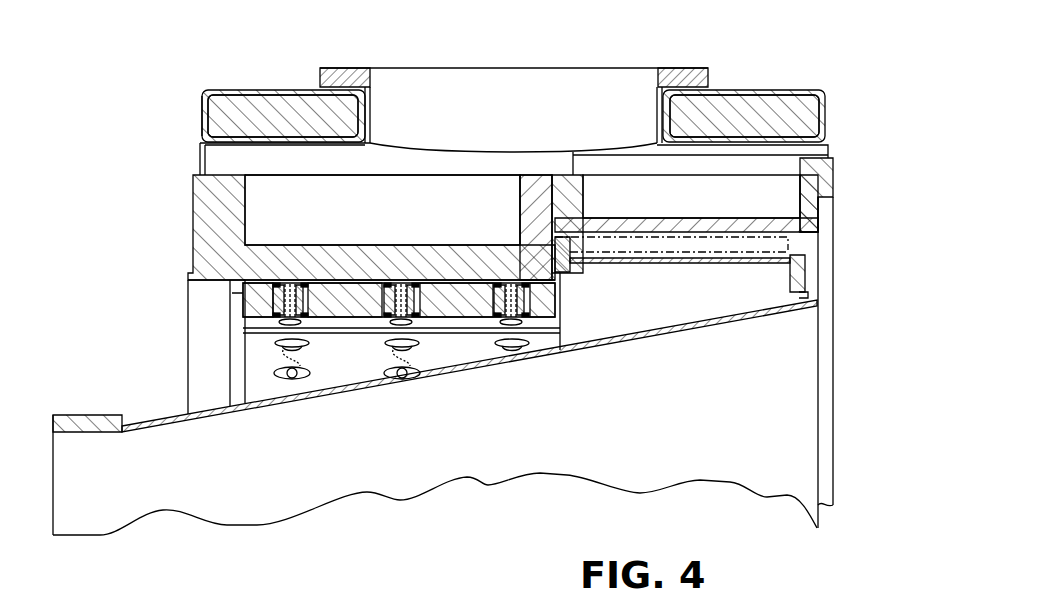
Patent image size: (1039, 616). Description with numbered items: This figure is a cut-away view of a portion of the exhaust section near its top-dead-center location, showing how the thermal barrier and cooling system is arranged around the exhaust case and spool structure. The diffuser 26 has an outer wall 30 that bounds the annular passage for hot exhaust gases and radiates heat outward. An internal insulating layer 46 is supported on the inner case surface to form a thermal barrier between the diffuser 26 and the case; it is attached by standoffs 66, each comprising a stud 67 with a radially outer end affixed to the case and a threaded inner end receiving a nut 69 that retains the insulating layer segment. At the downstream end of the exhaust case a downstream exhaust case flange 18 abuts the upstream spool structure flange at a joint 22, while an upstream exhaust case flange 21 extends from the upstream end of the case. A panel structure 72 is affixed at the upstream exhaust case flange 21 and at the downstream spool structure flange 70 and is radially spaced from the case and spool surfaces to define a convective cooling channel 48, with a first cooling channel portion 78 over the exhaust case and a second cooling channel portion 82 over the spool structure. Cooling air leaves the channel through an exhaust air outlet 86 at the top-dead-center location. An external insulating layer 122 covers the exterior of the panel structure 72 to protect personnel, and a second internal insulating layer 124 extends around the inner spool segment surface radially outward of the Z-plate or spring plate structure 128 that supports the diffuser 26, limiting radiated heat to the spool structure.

The downstream exhaust case flange 18 is at (533, 185).
The upstream exhaust case flange 21 is at (222, 217).
The joint 22 is at (571, 185).
The diffuser 26 is at (157, 415).
The outer wall 30 is at (178, 413).
The internal insulating layer 46 is at (243, 280).
The convective cooling channel 48 is at (430, 161).
The standoff 66 is at (279, 302).
The stud 67 is at (275, 320).
The nut 69 is at (318, 335).
The downstream spool structure flange 70 is at (832, 165).
The panel structure 72 is at (277, 137).
The first cooling channel portion 78 is at (288, 193).
The second cooling channel portion 82 is at (751, 197).
The exhaust air outlet 86 is at (628, 82).
The external insulating layer 122 is at (208, 111).
The second internal insulating layer 124 is at (795, 240).
The Z-plate or spring plate structure 128 is at (733, 265).